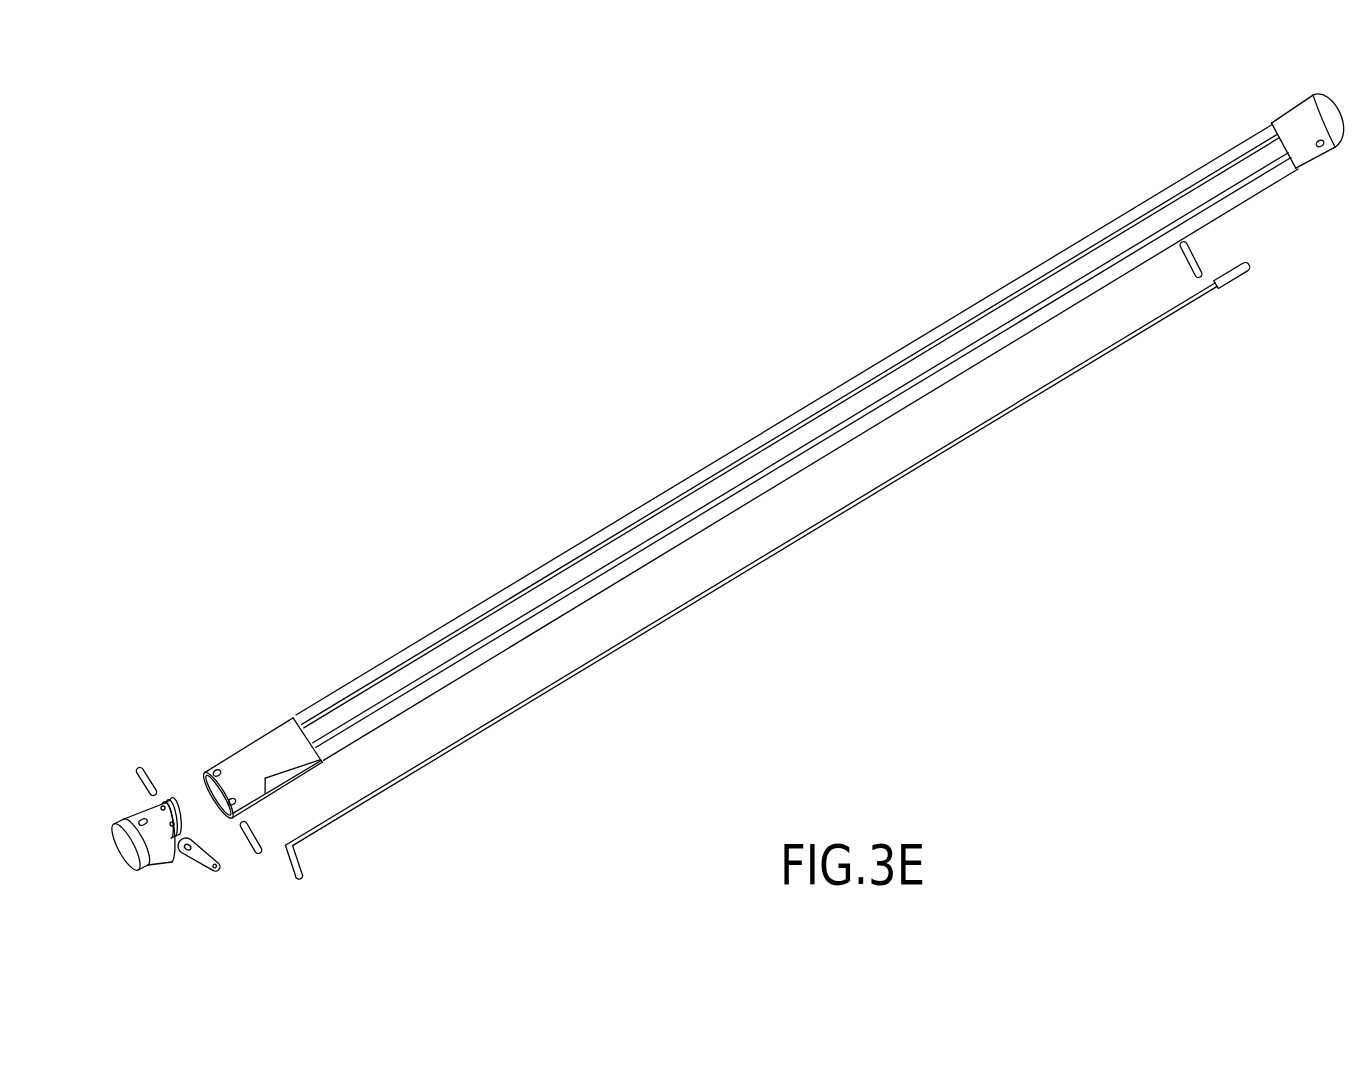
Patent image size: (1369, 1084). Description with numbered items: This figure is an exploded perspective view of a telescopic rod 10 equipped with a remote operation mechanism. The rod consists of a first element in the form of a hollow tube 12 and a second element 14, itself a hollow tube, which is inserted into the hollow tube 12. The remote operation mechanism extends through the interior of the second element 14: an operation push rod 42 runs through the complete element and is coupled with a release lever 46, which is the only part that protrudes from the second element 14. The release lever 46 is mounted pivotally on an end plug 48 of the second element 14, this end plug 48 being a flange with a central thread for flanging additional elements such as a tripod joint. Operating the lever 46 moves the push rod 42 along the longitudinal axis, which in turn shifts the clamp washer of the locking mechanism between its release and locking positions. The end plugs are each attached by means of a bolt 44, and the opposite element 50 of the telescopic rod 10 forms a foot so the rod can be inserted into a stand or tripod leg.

The telescopic rod 10 is at (714, 352).
The first element (hollow tube) 12 is at (1010, 283).
The second element 14 is at (244, 748).
The operation push rod 42 is at (996, 421).
The bolt 44 is at (1197, 252).
The release lever (operation handle) 46 is at (200, 862).
The end plug 48 is at (112, 833).
The foot (opposite element) 50 is at (1294, 125).